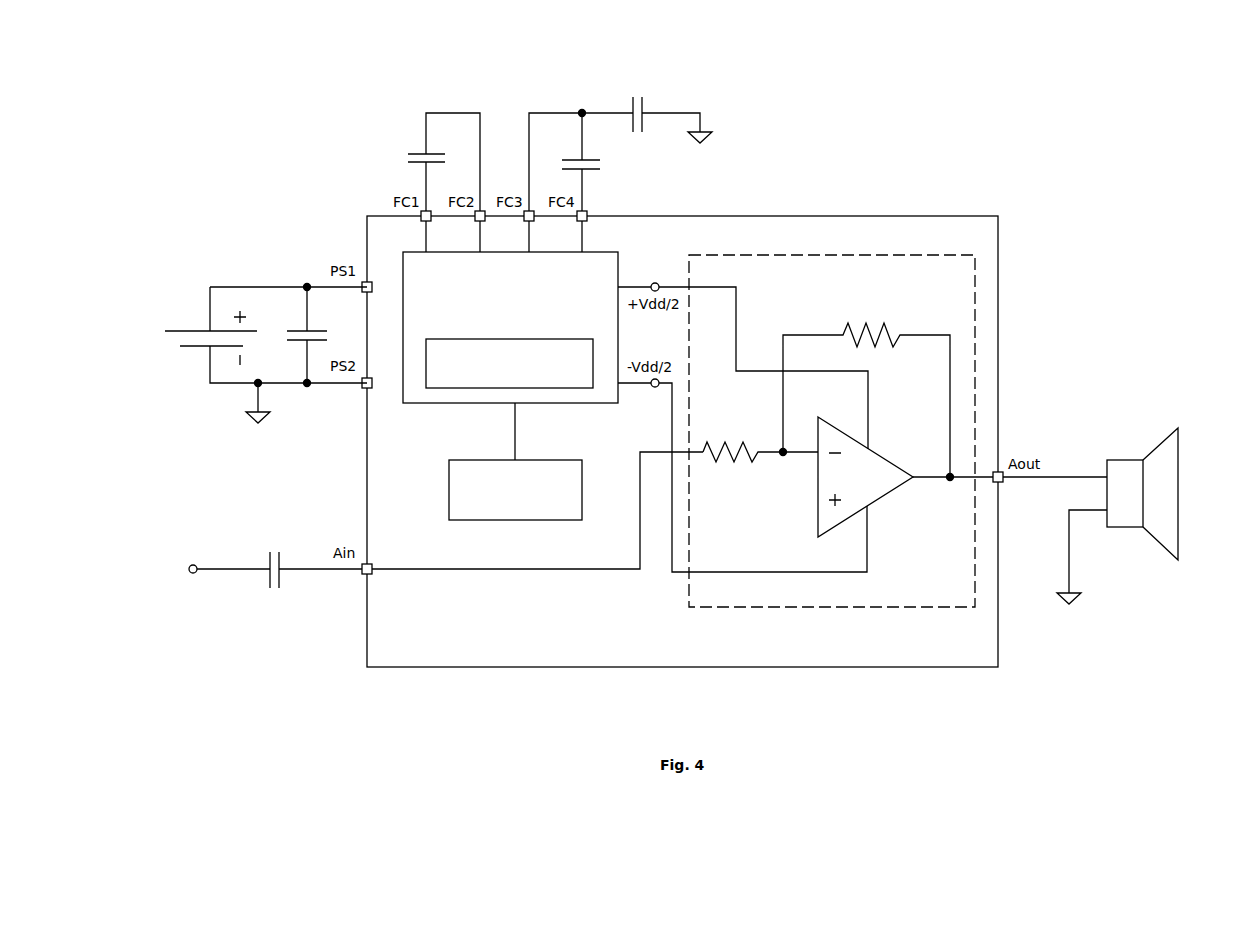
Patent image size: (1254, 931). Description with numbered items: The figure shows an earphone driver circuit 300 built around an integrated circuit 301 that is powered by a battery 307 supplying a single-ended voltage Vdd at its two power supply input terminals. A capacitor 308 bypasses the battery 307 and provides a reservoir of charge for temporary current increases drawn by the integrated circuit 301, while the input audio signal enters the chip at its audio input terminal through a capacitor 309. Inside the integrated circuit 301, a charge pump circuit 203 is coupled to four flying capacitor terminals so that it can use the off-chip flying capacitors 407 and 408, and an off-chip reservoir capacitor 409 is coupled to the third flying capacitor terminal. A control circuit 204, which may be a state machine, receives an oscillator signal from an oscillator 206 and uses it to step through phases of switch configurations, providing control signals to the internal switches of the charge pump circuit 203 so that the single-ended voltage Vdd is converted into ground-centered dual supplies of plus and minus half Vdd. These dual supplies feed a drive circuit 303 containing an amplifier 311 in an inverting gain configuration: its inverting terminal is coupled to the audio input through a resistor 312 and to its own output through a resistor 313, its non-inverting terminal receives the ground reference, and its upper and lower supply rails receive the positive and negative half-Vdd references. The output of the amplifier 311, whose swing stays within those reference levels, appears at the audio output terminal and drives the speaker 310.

The earphone driver circuit 300 is at (1073, 90).
The integrated circuit 301 is at (446, 637).
The drive circuit 303 is at (805, 452).
The battery 307 is at (192, 327).
The capacitor 308 is at (302, 330).
The capacitor 309 is at (268, 585).
The speaker 310 is at (1181, 428).
The amplifier 311 is at (878, 497).
The resistor 312 is at (720, 465).
The resistor 313 is at (865, 322).
The flying capacitor 407 is at (418, 150).
The flying capacitor 408 is at (597, 171).
The reservoir capacitor 409 is at (648, 105).
The charge pump circuit 203 is at (543, 404).
The control circuit 204 is at (453, 389).
The oscillator 206 is at (462, 521).